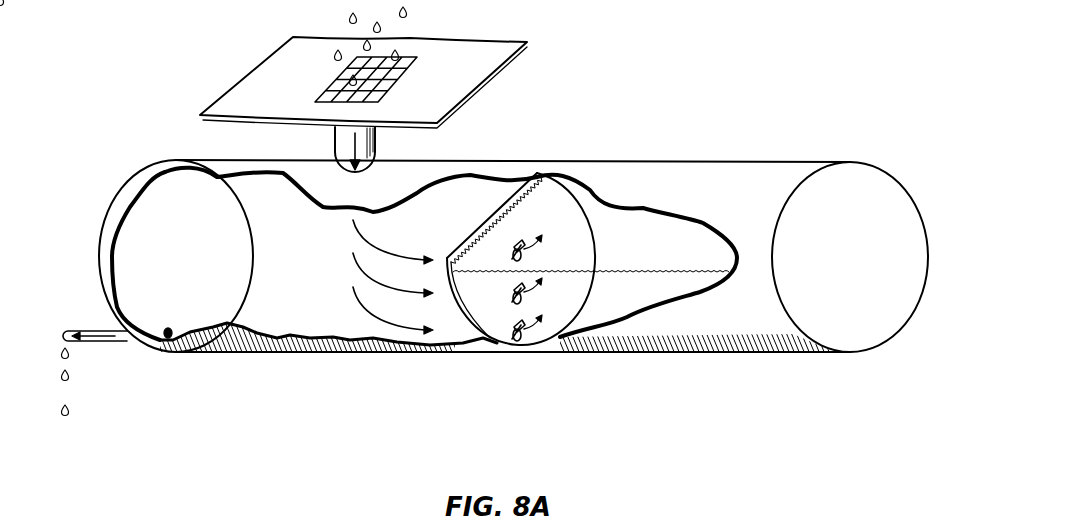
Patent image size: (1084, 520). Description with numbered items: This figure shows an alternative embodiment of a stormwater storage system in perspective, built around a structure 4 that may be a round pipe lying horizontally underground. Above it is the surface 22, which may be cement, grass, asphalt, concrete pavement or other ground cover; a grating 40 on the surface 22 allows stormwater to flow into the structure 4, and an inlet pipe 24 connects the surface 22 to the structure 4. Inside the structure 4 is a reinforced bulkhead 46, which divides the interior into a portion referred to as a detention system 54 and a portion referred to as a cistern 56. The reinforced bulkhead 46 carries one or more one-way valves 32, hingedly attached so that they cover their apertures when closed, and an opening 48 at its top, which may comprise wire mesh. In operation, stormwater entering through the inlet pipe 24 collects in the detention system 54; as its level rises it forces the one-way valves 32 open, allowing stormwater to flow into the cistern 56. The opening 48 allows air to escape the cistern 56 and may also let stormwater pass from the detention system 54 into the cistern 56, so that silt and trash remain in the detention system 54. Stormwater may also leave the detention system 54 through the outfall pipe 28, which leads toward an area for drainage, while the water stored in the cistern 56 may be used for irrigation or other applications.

The structure 4 is at (680, 170).
The surface 22 is at (457, 77).
The inlet pipe 24 is at (335, 147).
The outfall pipe 28 is at (88, 342).
The one-way valve 32 is at (513, 337).
The grating 40 is at (413, 57).
The reinforced bulkhead 46 is at (138, 235).
The opening 48 is at (537, 175).
The detention system 54 is at (227, 333).
The cistern 56 is at (685, 323).